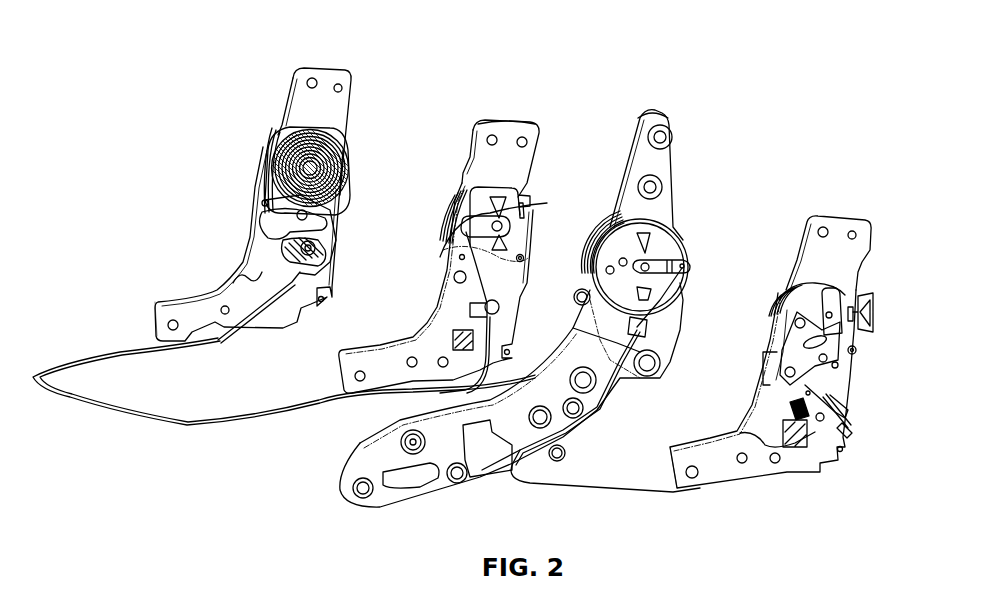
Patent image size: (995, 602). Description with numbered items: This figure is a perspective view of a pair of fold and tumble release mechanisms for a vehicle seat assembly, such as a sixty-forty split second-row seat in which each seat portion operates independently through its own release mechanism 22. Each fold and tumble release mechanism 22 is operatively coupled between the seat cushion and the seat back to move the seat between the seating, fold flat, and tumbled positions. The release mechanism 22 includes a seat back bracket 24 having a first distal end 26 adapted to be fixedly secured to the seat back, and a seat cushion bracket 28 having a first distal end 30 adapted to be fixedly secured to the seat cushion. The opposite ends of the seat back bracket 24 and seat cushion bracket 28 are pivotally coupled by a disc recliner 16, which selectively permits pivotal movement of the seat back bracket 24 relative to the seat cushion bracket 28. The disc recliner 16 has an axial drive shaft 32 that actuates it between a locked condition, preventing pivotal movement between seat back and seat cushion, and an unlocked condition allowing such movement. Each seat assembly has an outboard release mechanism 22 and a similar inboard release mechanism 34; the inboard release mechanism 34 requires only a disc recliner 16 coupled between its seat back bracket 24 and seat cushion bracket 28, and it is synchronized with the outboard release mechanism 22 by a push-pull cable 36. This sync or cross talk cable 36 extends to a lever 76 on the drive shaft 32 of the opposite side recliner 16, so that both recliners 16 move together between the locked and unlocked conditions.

The disc recliner 16 is at (268, 150).
The fold and tumble release mechanism 22 is at (337, 40).
The seat back bracket 24 is at (290, 100).
The first distal end 26 is at (310, 78).
The seat cushion bracket 28 is at (197, 290).
The first distal end 30 is at (168, 325).
The axial drive shaft 32 is at (305, 165).
The inboard release mechanism 34 is at (506, 118).
The push-pull cable 36 is at (185, 425).
The lever 76 is at (468, 240).